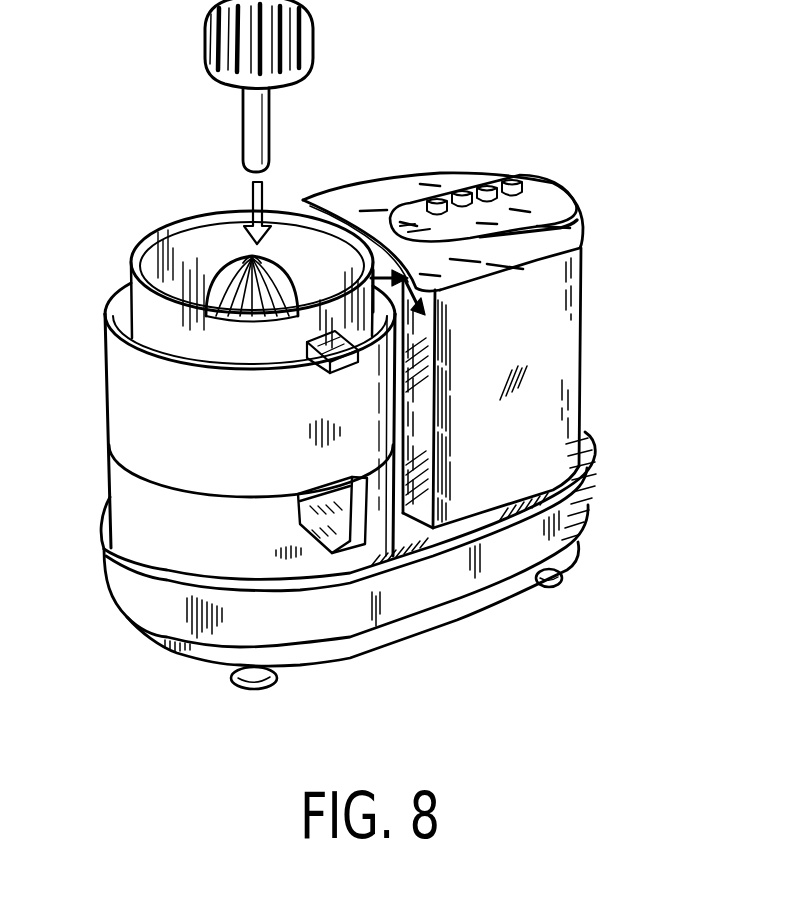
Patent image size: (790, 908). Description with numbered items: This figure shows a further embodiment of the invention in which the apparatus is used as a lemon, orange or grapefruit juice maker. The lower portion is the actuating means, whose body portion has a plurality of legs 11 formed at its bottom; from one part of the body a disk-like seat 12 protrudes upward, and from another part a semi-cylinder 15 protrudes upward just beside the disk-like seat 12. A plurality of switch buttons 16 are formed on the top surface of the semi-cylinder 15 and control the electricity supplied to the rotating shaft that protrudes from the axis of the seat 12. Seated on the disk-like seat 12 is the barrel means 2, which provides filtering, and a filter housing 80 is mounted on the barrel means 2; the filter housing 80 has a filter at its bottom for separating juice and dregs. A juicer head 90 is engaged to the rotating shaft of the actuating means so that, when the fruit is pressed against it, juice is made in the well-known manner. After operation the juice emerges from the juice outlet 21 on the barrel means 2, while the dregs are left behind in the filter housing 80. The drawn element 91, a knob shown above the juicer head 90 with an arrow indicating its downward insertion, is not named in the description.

The barrel means 2 is at (100, 428).
The legs 11 is at (562, 577).
The disk-like seat 12 is at (597, 506).
The semi-cylinder 15 is at (560, 338).
The switch buttons 16 is at (522, 176).
The juice outlet 21 is at (300, 514).
The filter housing 80 is at (128, 256).
The juicer head 90 is at (294, 272).
The pusher knob 91 is at (313, 22).